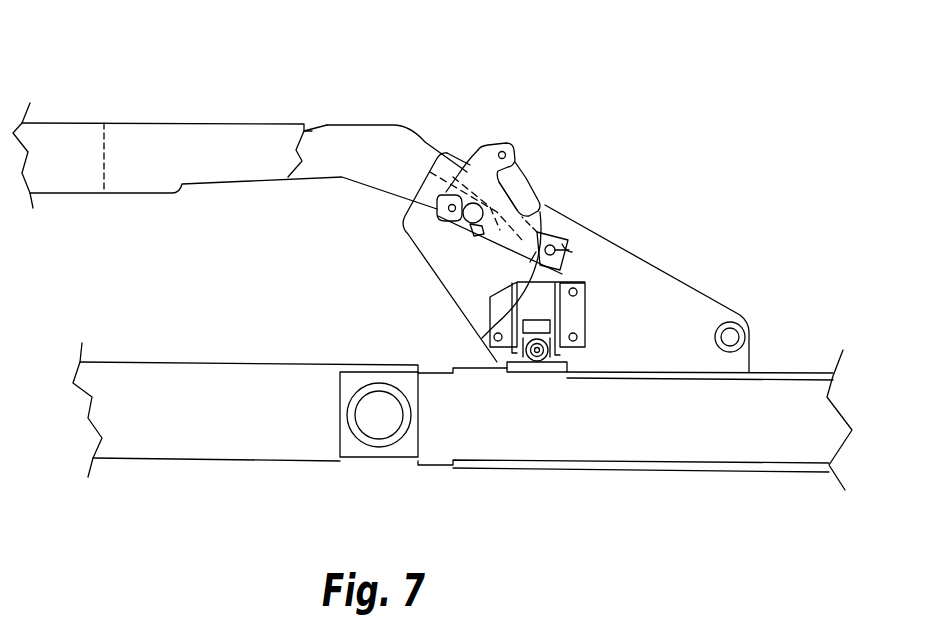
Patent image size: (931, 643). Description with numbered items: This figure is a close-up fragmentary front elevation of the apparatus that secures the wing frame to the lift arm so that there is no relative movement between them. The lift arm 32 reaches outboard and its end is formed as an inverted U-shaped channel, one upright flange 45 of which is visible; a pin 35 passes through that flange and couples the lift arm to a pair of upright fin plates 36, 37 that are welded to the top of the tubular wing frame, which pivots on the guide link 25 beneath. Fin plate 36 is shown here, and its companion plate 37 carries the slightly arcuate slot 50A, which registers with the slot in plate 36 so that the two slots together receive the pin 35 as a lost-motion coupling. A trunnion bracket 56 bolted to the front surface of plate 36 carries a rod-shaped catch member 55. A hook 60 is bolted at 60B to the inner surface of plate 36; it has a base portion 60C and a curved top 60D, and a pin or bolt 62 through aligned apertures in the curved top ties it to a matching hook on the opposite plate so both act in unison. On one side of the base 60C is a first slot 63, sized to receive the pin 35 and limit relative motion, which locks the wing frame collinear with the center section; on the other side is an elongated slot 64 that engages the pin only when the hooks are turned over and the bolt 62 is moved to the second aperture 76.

The guide link 25 is at (748, 438).
The lift arm 32 is at (188, 124).
The pin 35 is at (468, 229).
The fin plate 36 is at (690, 312).
The fin plate 37 is at (447, 151).
The upright flange 45 is at (358, 140).
The slot 50A is at (436, 203).
The catch member 55 is at (567, 362).
The trunnion bracket 56 is at (578, 316).
The hook 60 is at (536, 203).
The bolt 60B is at (572, 252).
The base portion 60C is at (507, 243).
The curved top 60D is at (481, 148).
The pin or bolt 62 is at (508, 152).
The first slot 63 is at (478, 222).
The elongated slot 64 is at (512, 191).
The aperture 76 is at (449, 212).